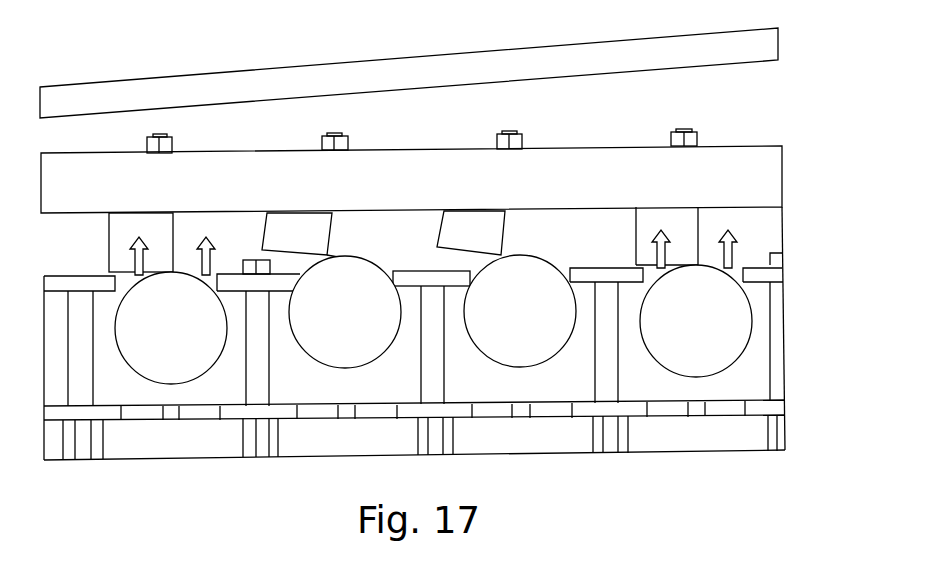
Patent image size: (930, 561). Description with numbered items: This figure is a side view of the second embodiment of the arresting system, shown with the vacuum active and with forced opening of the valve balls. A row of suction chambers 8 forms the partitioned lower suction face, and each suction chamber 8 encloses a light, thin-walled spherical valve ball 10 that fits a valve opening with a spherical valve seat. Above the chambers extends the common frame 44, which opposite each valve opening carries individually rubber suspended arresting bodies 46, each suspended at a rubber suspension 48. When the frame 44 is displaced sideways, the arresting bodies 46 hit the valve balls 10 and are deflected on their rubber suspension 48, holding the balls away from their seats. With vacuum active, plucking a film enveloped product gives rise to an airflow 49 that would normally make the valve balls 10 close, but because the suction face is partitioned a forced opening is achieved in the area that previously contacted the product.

The suction chamber 8 is at (166, 453).
The valve ball 10 is at (157, 338).
The common frame 44 is at (762, 186).
The arresting body 46 is at (310, 227).
The rubber suspension 48 is at (172, 147).
The airflow 49 is at (134, 250).